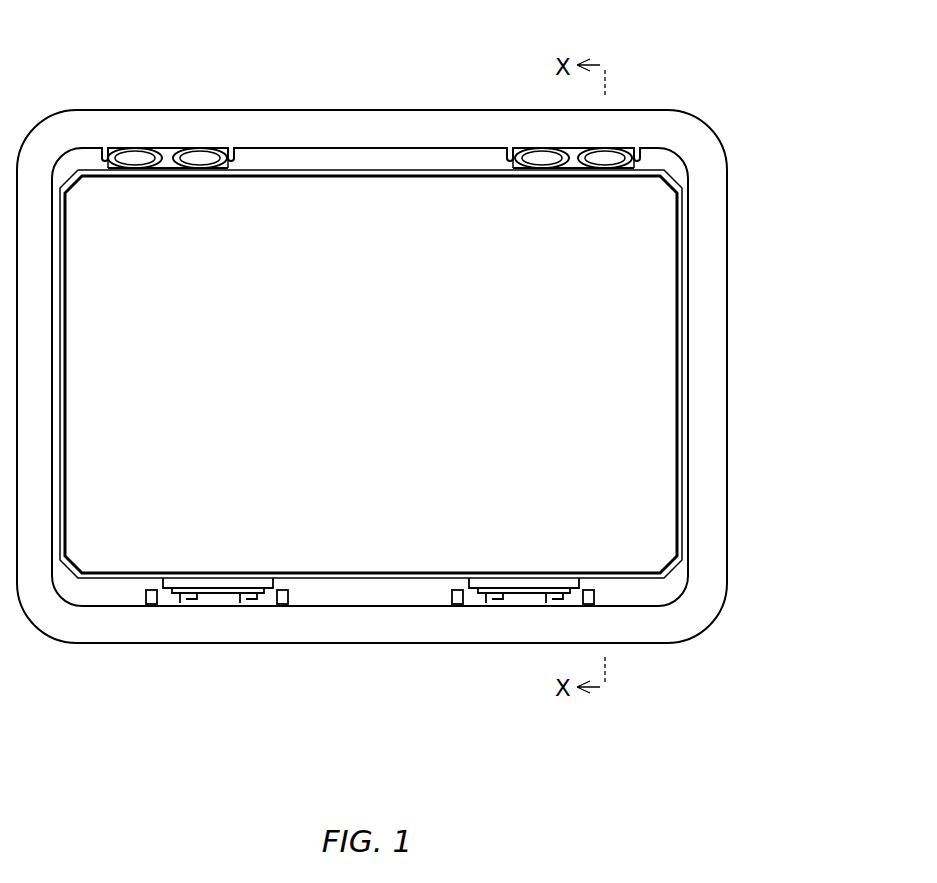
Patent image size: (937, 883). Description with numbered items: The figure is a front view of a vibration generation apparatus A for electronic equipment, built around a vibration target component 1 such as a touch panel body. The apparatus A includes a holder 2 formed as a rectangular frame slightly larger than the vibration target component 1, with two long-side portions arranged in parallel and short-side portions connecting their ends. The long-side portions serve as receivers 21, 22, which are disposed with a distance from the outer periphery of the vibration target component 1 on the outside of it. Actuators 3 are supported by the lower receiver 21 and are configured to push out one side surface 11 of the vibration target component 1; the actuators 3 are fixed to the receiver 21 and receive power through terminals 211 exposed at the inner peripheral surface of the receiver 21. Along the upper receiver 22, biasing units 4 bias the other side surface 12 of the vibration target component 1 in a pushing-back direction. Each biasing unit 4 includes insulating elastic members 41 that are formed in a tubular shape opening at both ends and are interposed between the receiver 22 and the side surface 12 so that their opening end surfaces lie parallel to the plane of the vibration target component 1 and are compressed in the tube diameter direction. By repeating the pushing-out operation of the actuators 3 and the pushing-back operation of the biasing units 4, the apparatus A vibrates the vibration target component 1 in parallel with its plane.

The vibration target component 1 is at (393, 352).
The holder 2 is at (745, 410).
The receiver 21 is at (372, 645).
The receiver 22 is at (340, 122).
The terminals 211 is at (150, 607).
The one side surface 11 is at (197, 607).
The other side surface 12 is at (112, 146).
The actuators 3 is at (214, 607).
The biasing units 4 is at (257, 122).
The insulating elastic members 41 is at (210, 146).
The vibration generation apparatus A is at (142, 70).